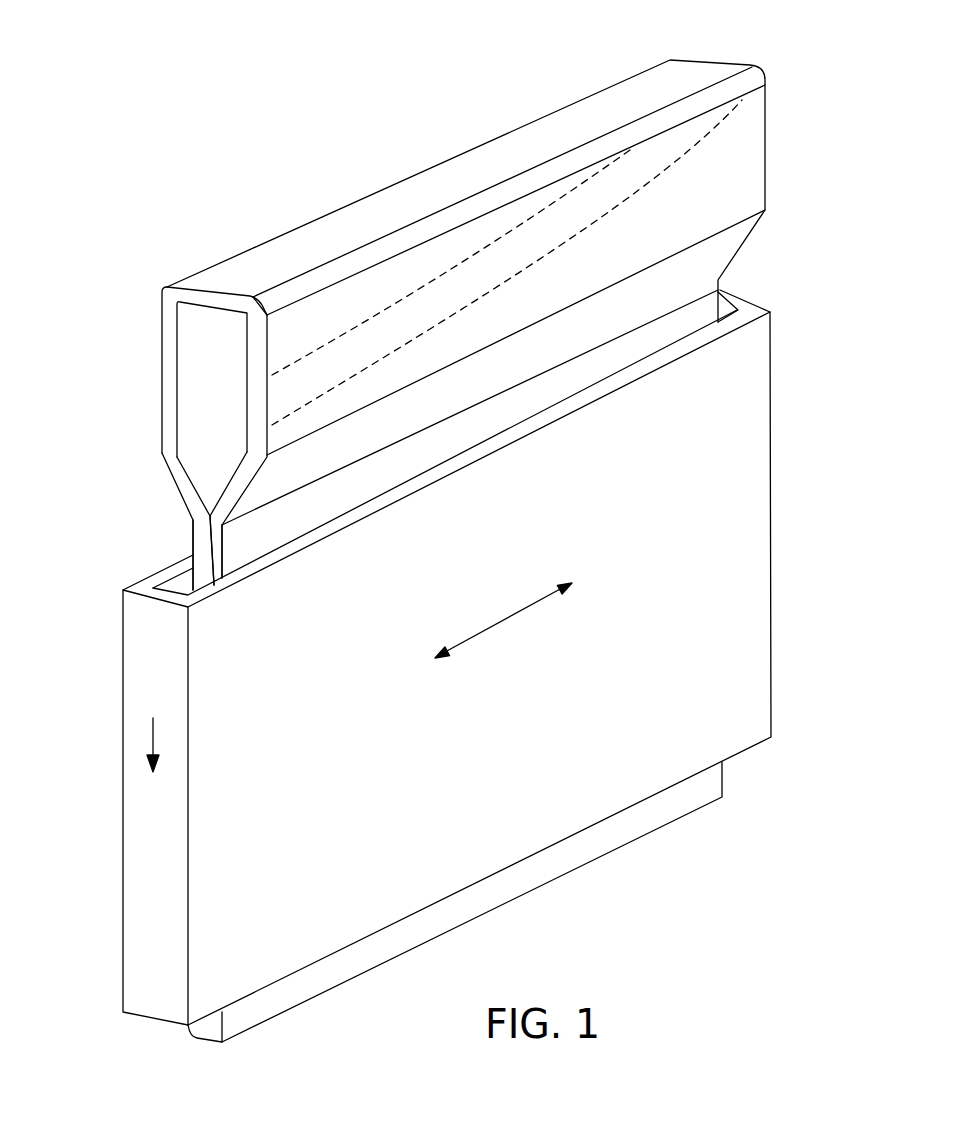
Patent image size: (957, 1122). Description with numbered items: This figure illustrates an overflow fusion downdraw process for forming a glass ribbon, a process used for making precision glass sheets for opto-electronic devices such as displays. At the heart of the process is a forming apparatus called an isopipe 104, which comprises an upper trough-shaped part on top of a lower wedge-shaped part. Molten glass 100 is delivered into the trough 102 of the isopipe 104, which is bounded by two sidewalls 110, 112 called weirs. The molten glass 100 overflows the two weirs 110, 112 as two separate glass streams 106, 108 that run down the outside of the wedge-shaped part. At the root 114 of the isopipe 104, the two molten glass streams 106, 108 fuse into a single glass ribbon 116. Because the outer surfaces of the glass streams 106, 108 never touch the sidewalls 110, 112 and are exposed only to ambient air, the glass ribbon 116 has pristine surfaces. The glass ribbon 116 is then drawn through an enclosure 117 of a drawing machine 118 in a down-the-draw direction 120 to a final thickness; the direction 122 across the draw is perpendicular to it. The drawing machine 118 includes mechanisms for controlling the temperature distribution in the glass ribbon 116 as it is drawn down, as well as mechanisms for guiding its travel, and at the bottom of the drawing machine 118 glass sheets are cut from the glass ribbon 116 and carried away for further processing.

The molten glass 100 is at (420, 180).
The trough 102 is at (705, 138).
The isopipe 104 is at (205, 327).
The glass stream 106 is at (167, 393).
The glass stream 108 is at (255, 357).
The sidewall 110 is at (172, 327).
The sidewall 112 is at (258, 303).
The root 114 is at (212, 560).
The glass ribbon 116 is at (200, 543).
The enclosure 117 is at (726, 306).
The drawing machine 118 is at (762, 413).
The direction 120 is at (152, 738).
The direction 122 is at (508, 620).